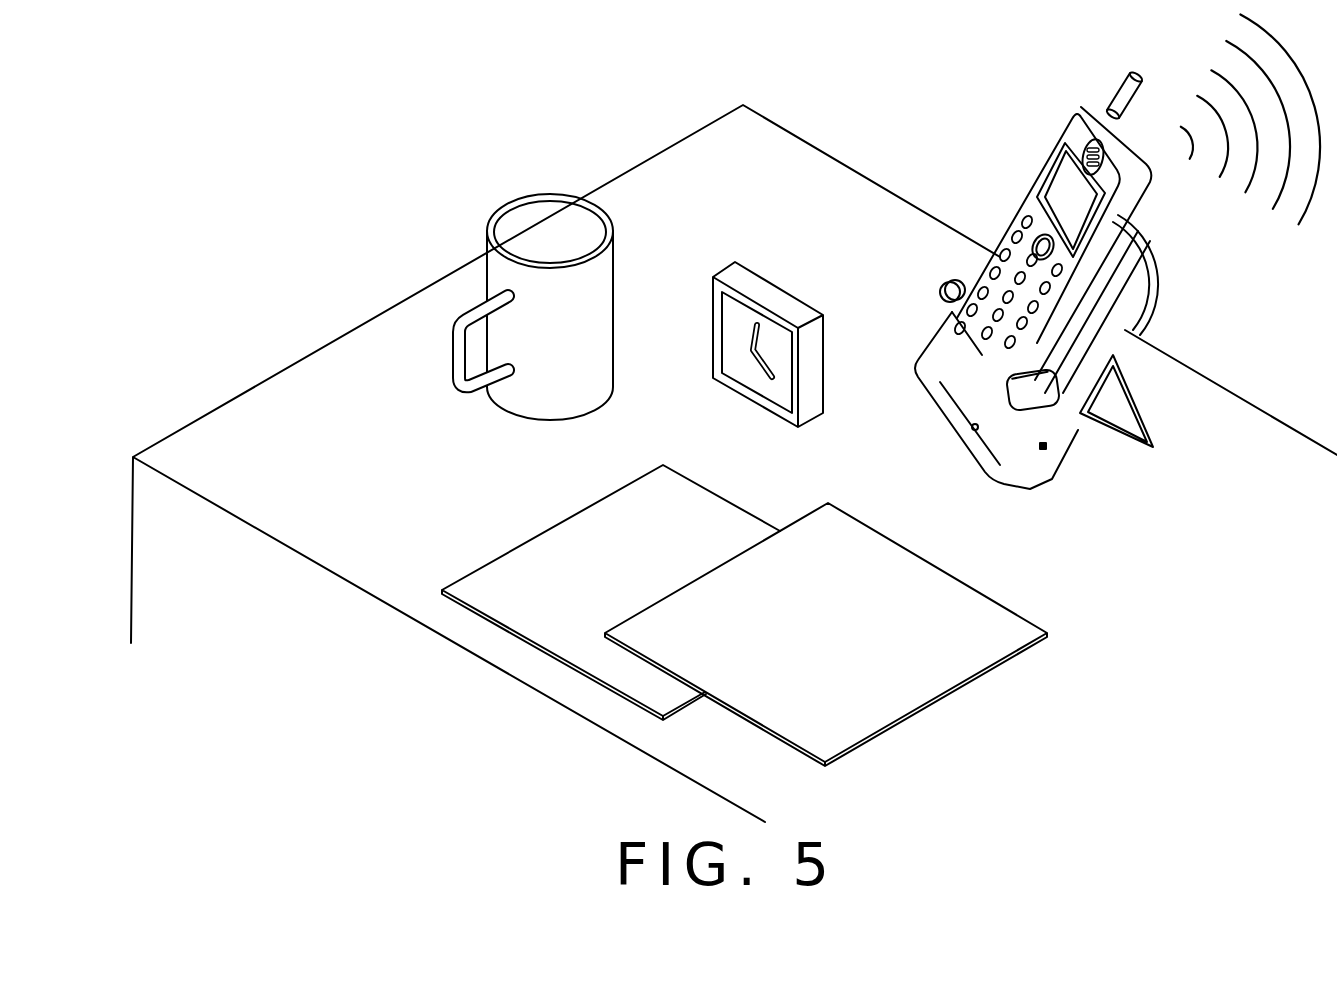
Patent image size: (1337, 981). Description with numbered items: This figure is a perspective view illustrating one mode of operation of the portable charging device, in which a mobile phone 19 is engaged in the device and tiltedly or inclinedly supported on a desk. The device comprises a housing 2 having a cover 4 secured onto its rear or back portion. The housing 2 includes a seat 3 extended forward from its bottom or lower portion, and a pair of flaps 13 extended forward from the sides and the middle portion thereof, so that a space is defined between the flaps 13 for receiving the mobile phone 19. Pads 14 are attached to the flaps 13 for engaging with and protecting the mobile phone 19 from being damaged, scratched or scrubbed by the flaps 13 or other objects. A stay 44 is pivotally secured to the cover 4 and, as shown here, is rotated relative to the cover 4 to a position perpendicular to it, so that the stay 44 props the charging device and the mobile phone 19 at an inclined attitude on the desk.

The housing 2 is at (1110, 297).
The seat 3 is at (997, 457).
The cover 4 is at (1143, 258).
The flaps 13 is at (1037, 392).
The pads 14 is at (947, 284).
The mobile phone 19 is at (1022, 208).
The stay 44 is at (1153, 448).